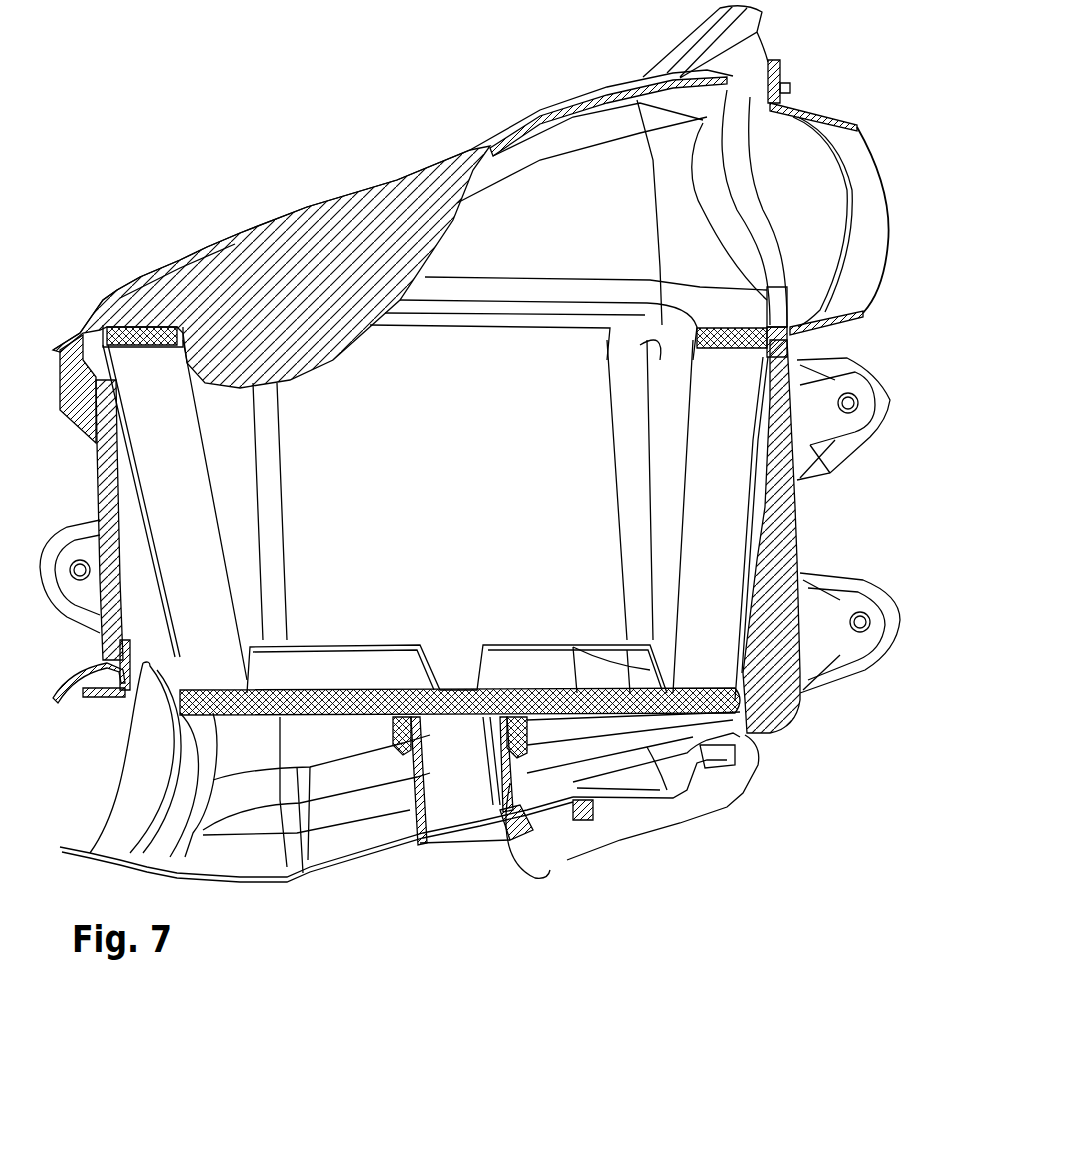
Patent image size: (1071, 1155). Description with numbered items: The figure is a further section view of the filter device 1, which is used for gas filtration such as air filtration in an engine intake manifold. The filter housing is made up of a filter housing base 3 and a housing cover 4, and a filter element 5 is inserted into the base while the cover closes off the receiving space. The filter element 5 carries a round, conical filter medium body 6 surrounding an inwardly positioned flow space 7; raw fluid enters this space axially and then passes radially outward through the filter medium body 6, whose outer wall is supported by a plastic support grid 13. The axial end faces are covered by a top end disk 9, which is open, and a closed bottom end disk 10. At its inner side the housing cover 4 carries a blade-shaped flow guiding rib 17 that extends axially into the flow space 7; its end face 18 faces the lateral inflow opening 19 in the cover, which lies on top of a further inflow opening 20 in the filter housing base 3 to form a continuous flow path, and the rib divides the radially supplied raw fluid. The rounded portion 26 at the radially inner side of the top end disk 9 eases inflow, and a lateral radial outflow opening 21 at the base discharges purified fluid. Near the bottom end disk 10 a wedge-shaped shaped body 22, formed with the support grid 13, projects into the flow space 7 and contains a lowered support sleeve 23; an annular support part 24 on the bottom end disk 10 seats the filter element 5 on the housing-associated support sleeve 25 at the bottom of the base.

The filter device 1 is at (183, 180).
The filter housing base 3 is at (97, 494).
The housing cover 4 is at (545, 110).
The filter element 5 is at (678, 531).
The filter medium body 6 is at (720, 530).
The flow space 7 is at (534, 352).
The top end disk 9 is at (713, 310).
The bottom end disk 10 is at (363, 710).
The support grid 13 is at (165, 621).
The flow guiding rib 17 is at (345, 345).
The end face 18 is at (435, 253).
The inflow opening 19 is at (730, 97).
The further inflow opening 20 is at (880, 160).
The outflow opening 21 is at (72, 703).
The shaped body 22 is at (357, 645).
The support sleeve 23 is at (460, 710).
The annular support part 24 is at (403, 743).
The support sleeve 25 is at (510, 783).
The rounded portion 26 is at (695, 325).